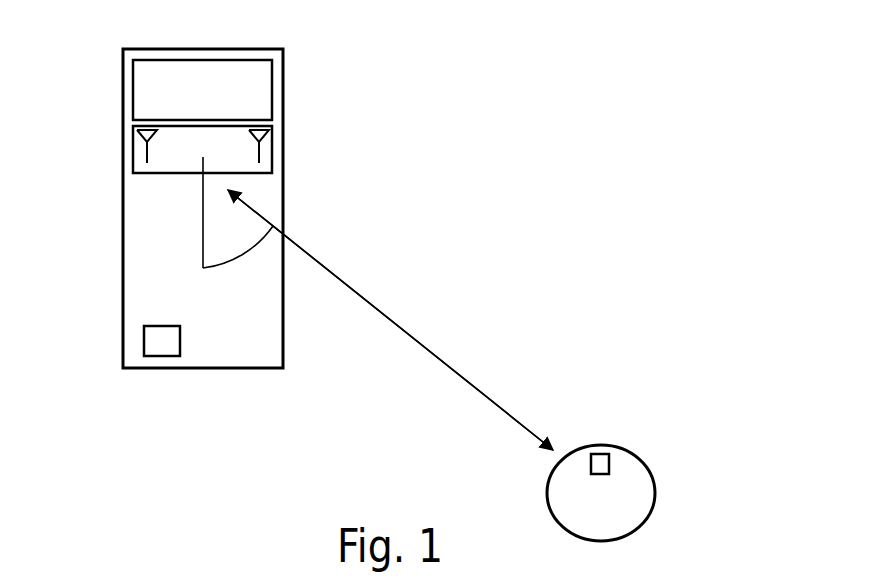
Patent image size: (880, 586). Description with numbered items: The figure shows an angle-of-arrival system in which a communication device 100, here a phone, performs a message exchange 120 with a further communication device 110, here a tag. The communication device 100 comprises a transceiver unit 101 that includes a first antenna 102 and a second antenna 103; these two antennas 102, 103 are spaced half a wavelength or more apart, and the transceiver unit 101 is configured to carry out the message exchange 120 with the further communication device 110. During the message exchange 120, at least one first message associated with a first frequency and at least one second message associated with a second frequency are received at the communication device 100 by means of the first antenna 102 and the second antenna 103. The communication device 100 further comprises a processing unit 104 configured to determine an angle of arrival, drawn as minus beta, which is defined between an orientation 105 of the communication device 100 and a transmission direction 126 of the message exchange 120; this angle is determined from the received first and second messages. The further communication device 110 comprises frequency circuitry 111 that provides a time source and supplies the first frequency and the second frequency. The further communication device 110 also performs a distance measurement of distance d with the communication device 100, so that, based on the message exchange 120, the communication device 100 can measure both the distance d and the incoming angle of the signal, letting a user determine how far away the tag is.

The communication device 100 is at (311, 55).
The transceiver unit 101 is at (150, 174).
The first antenna 102 is at (147, 142).
The second antenna 103 is at (261, 143).
The processing unit 104 is at (158, 356).
The orientation 105 is at (203, 203).
The further communication device 110 is at (663, 513).
The frequency circuitry 111 is at (600, 454).
The message exchange 120 is at (407, 348).
The transmission direction 126 is at (318, 256).